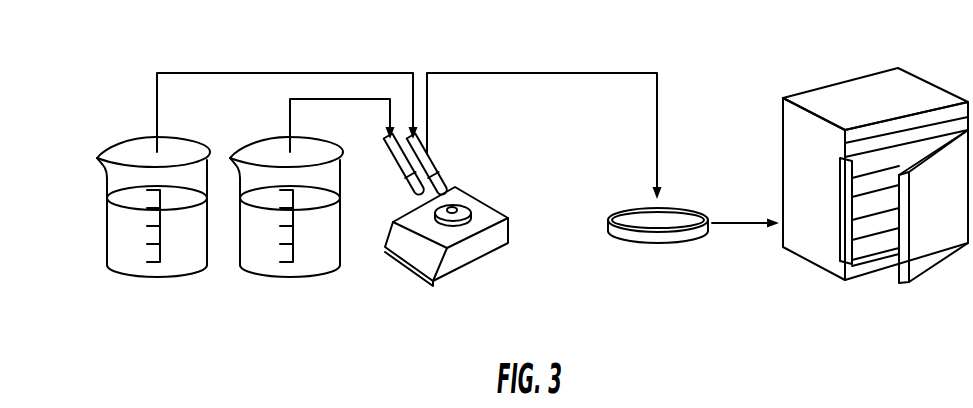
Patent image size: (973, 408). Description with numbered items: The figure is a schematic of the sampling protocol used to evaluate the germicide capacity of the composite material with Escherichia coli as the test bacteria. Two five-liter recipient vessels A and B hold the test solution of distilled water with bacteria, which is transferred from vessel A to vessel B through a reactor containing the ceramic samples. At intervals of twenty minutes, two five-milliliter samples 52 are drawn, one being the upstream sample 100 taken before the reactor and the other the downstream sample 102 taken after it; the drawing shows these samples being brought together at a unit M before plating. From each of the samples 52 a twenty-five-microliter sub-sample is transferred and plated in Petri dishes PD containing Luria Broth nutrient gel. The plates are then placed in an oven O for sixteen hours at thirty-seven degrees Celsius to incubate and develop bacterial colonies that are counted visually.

The upstream sample 100 is at (113, 250).
The downstream sample 102 is at (333, 248).
The 5 ml samples 52 is at (437, 166).
The vessel A is at (184, 287).
The vessel B is at (309, 287).
The mixer M is at (459, 267).
The Petri dishes PD is at (663, 227).
The oven O is at (858, 97).